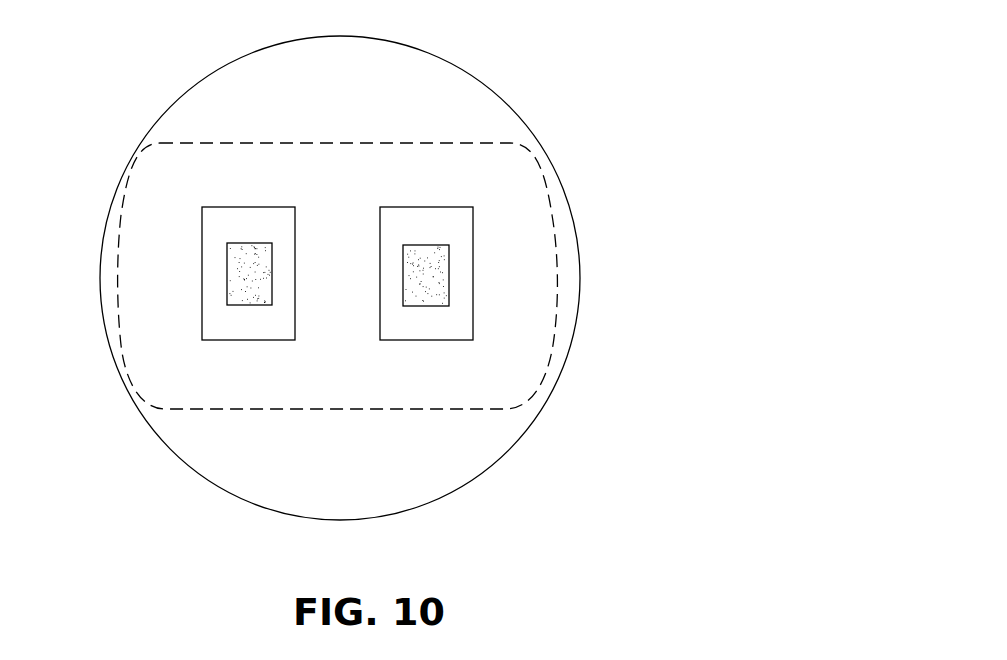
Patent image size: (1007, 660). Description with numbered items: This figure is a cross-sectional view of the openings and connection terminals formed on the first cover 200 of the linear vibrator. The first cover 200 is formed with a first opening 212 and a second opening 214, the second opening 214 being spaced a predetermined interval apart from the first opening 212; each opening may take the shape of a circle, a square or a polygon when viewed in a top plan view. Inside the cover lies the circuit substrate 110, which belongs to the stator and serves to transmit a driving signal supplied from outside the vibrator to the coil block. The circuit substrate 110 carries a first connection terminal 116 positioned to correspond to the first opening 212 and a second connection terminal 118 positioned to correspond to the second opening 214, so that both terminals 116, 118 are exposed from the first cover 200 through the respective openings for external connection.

The circuit substrate 110 is at (218, 142).
The first connection terminal 116 is at (247, 253).
The second connection terminal 118 is at (435, 253).
The first cover 200 is at (282, 460).
The first opening 212 is at (241, 327).
The second opening 214 is at (455, 313).